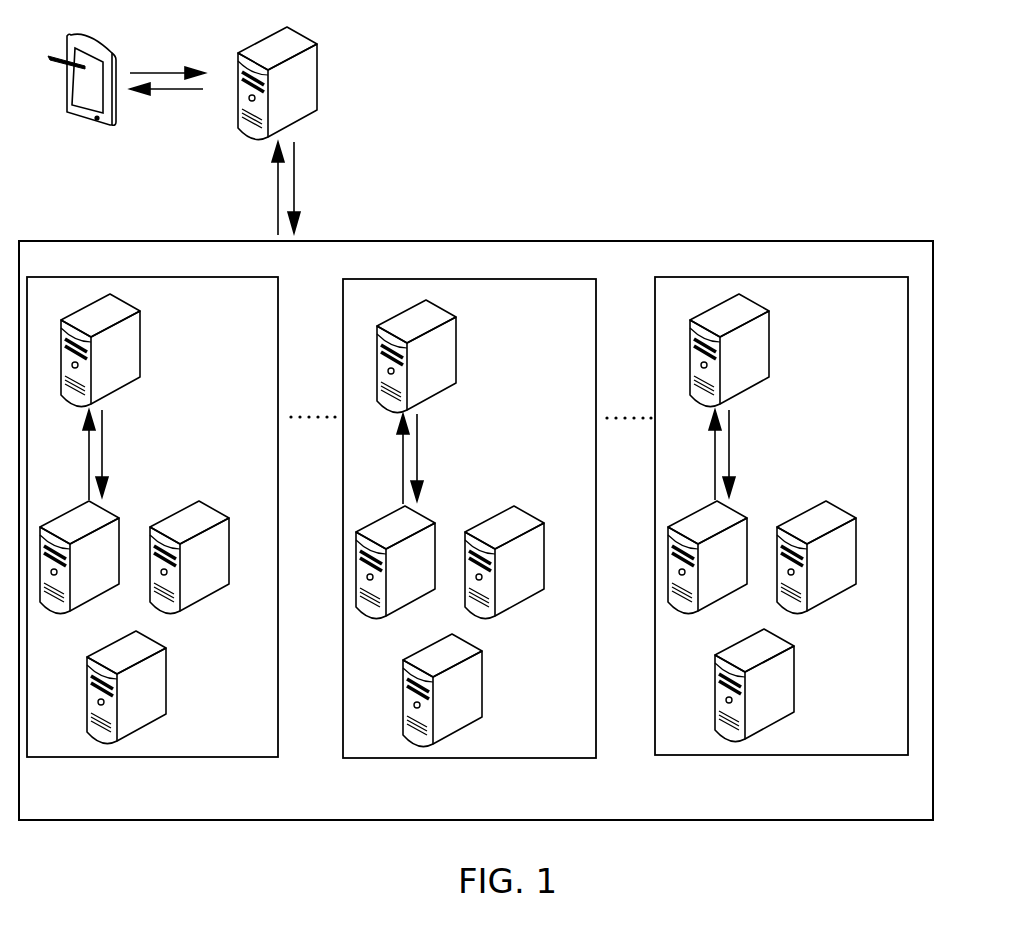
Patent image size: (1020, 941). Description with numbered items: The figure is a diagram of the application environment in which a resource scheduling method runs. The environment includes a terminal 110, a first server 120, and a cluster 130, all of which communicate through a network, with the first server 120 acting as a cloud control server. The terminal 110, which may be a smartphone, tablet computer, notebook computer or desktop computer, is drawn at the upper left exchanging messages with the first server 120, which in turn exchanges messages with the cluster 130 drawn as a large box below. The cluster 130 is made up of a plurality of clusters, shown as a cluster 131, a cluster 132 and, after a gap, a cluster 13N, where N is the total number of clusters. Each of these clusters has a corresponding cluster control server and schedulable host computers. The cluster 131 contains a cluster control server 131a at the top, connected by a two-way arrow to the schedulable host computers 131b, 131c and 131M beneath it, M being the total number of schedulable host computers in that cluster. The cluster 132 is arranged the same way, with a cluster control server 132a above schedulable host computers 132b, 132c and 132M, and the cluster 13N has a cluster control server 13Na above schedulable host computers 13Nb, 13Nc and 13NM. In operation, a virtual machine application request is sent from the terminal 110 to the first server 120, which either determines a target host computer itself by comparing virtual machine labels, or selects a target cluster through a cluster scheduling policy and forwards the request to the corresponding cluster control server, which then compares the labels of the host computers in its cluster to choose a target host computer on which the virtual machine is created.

The terminal 110 is at (92, 42).
The first server 120 is at (290, 40).
The cluster 130 is at (716, 240).
The cluster 131 is at (194, 276).
The cluster control server 131a is at (110, 306).
The schedulable host computer 131b is at (88, 512).
The schedulable host computer 131c is at (197, 512).
The schedulable host computer 131M is at (136, 642).
The cluster 132 is at (505, 280).
The cluster control server 132a is at (426, 310).
The schedulable host computer 132b is at (405, 516).
The schedulable host computer 132c is at (513, 516).
The schedulable host computer 132M is at (452, 644).
The cluster 13N is at (818, 276).
The cluster control server 13Na is at (738, 308).
The schedulable host computer 13Nb is at (716, 512).
The schedulable host computer 13Nc is at (825, 512).
The schedulable host computer 13NM is at (764, 640).